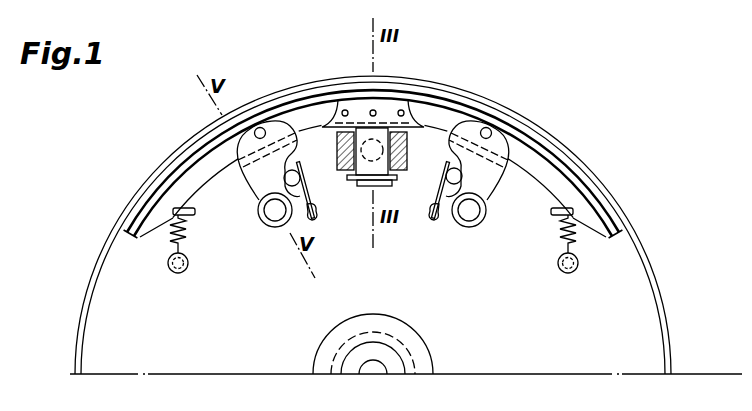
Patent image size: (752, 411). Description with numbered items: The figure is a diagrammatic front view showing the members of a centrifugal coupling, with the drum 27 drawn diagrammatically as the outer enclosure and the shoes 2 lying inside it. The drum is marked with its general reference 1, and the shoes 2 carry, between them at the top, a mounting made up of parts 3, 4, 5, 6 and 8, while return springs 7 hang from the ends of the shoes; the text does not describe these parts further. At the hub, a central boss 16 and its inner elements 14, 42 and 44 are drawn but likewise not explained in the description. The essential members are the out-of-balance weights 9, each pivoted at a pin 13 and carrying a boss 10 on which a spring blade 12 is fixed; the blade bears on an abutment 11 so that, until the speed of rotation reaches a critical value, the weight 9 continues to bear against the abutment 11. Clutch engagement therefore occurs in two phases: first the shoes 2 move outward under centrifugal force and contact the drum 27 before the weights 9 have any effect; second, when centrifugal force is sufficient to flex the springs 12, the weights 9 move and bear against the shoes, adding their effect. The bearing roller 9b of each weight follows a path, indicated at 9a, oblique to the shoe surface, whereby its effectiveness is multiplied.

The brake drum 1 is at (632, 277).
The drum 27 is at (100, 261).
The shoes 2 is at (560, 187).
The bracket 3 is at (352, 105).
The plunger pin 4 is at (365, 186).
The left block 5 is at (337, 143).
The right block 6 is at (407, 141).
The return spring 7 is at (170, 243).
The plate 8 is at (395, 178).
The weight 9 is at (247, 168).
The cam guide 9a is at (520, 190).
The bearing roller 9b is at (256, 134).
The boss 10 is at (316, 213).
The abutment 11 is at (408, 189).
The spring blade 12 is at (300, 178).
The pin boss 13 is at (278, 225).
The hub bore 14 is at (375, 372).
The hub 16 is at (424, 322).
The hub ring 42 is at (350, 370).
The hub bolt circle 44 is at (417, 368).